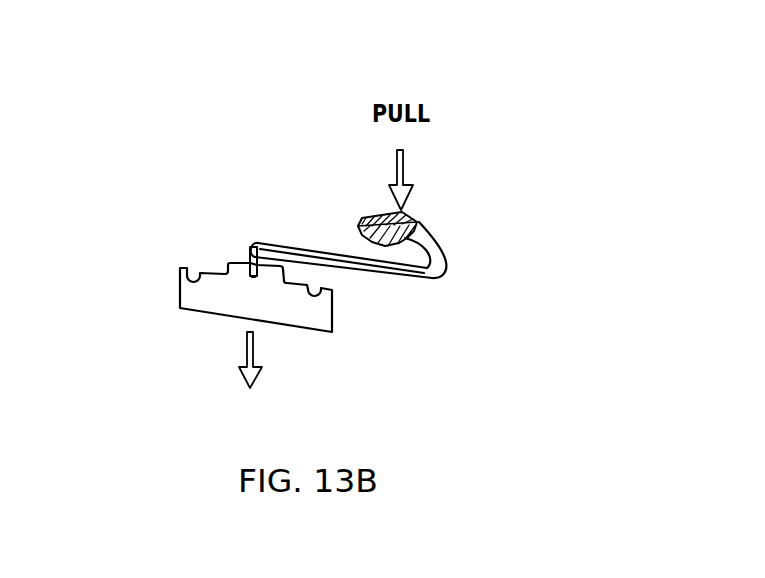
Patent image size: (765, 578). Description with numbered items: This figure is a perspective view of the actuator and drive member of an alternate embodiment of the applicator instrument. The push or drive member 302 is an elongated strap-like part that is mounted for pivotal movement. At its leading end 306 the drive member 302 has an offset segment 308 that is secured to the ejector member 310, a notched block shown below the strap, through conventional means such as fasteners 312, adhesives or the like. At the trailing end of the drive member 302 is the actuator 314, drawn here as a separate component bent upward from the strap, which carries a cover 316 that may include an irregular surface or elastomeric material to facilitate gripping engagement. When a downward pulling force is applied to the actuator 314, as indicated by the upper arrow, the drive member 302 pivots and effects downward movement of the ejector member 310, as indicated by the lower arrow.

The drive member 302 is at (317, 246).
The leading end 306 is at (272, 245).
The offset segment 308 is at (250, 243).
The ejector member 310 is at (290, 308).
The fasteners 312 is at (255, 278).
The actuator 314 is at (423, 245).
The cover 316 is at (402, 219).